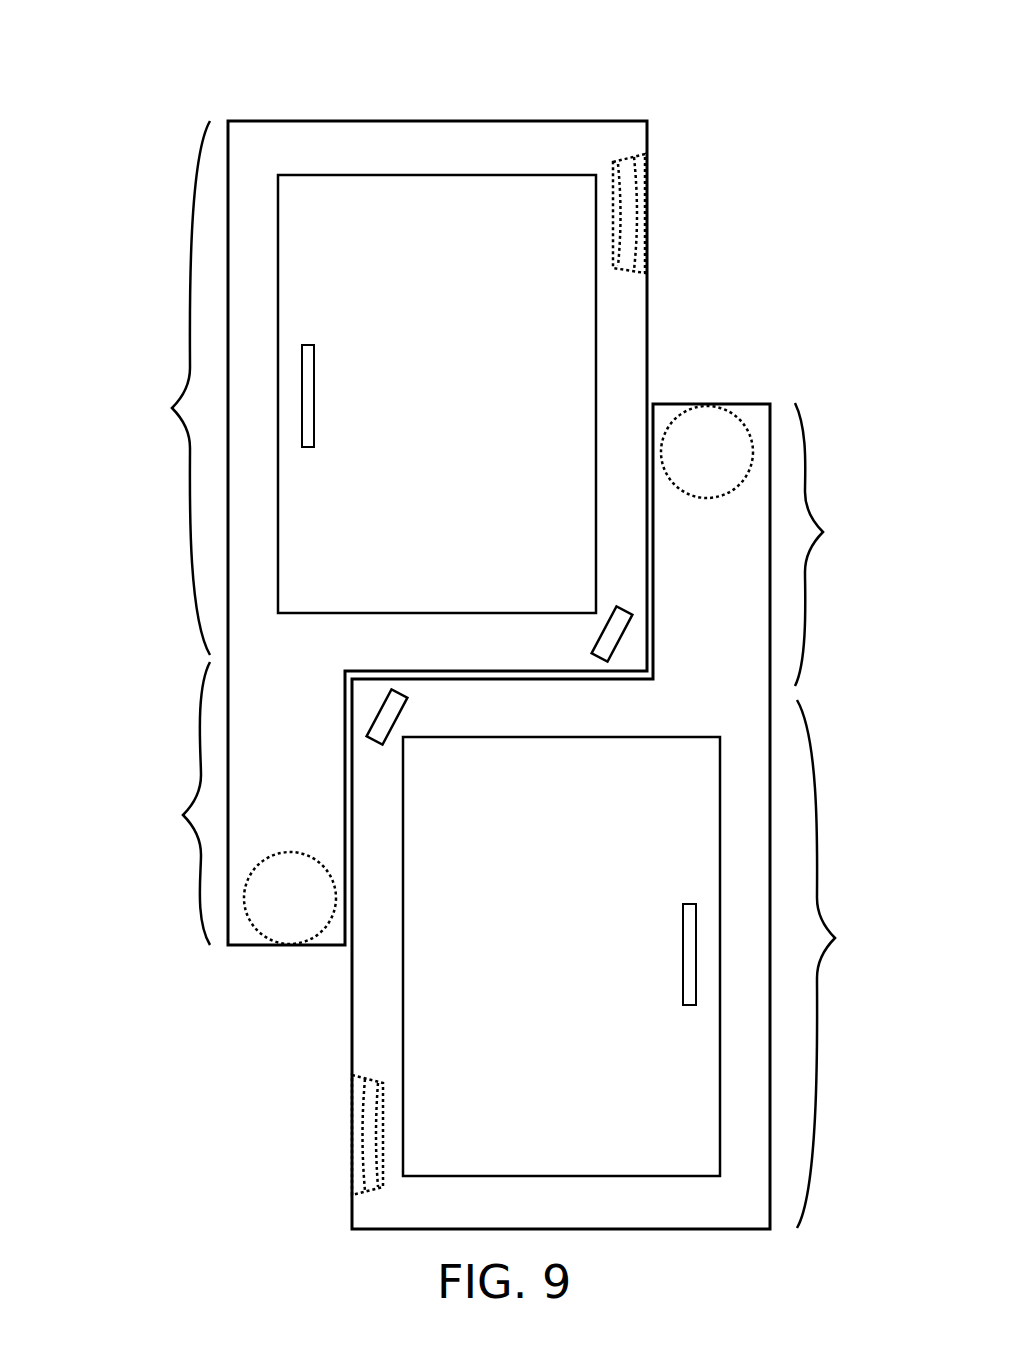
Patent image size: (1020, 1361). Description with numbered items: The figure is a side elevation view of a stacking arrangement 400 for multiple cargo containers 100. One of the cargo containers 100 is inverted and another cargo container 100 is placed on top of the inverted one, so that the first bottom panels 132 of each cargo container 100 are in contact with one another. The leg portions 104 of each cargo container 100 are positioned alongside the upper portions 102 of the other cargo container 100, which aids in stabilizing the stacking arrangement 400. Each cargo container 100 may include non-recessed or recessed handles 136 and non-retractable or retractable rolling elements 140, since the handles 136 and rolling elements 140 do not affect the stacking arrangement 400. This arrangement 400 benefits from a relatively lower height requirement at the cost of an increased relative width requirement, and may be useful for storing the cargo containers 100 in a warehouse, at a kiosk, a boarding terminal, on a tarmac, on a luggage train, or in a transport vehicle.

The stacking arrangement 400 is at (122, 78).
The cargo container 100 is at (668, 125).
The upper portion 102 is at (504, 674).
The leg portion 104 is at (507, 674).
The first bottom panel 132 is at (524, 671).
The handle 136 is at (645, 217).
The rolling element 140 is at (737, 412).